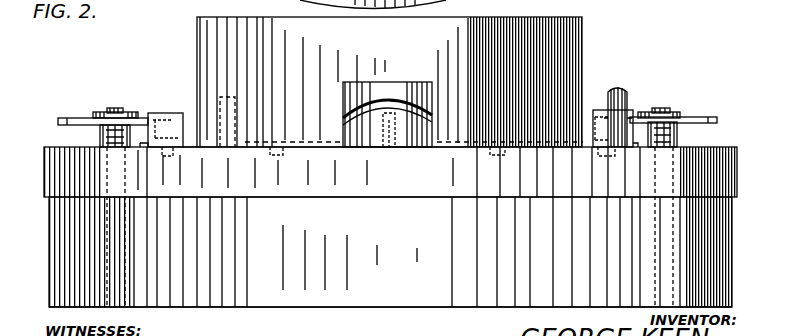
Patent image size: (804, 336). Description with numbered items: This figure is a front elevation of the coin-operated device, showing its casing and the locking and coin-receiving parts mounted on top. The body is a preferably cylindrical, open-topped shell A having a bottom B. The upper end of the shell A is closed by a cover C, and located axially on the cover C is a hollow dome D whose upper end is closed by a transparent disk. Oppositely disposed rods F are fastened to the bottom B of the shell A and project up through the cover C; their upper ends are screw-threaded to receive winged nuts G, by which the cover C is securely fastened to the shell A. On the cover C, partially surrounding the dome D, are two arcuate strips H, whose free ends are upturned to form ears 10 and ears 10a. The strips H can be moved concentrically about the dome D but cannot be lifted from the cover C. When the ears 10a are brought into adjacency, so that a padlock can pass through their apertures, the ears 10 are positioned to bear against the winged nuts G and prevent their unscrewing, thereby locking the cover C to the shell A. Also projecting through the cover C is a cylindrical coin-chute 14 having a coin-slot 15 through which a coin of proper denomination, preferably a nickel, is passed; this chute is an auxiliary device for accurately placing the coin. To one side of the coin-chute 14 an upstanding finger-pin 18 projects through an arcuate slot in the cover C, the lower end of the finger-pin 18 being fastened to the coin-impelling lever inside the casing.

The shell A is at (390, 227).
The bottom B is at (380, 312).
The cover C is at (390, 169).
The hollow dome D is at (591, 33).
The rods F is at (118, 101).
The winged nuts G is at (69, 110).
The arcuate strips H is at (193, 139).
The ears 10 is at (171, 108).
The ears 10a is at (383, 116).
The cylindrical coin-chute 14 is at (363, 78).
The coin-slot 15 is at (398, 97).
The finger-pin 18 is at (640, 74).